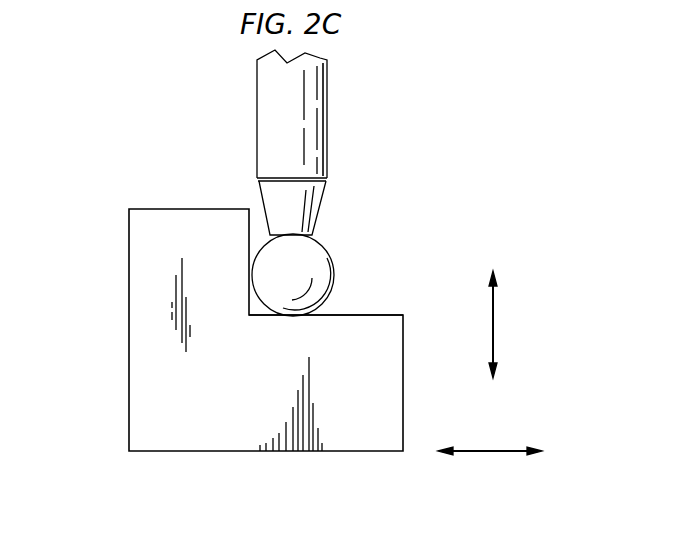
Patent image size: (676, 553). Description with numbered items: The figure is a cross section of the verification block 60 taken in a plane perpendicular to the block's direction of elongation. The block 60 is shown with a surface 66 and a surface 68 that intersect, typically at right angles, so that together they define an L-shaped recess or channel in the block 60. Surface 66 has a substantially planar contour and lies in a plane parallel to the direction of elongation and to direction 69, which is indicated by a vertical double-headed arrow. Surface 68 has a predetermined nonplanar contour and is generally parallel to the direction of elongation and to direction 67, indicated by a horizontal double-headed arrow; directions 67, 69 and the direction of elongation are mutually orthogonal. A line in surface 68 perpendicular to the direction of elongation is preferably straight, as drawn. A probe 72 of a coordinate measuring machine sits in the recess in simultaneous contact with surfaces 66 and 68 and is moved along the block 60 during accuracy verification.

The verification block 60 is at (130, 283).
The surface 66 is at (251, 224).
The probe 72 is at (333, 256).
The surface 68 is at (388, 314).
The direction 69 is at (494, 312).
The direction 67 is at (484, 453).